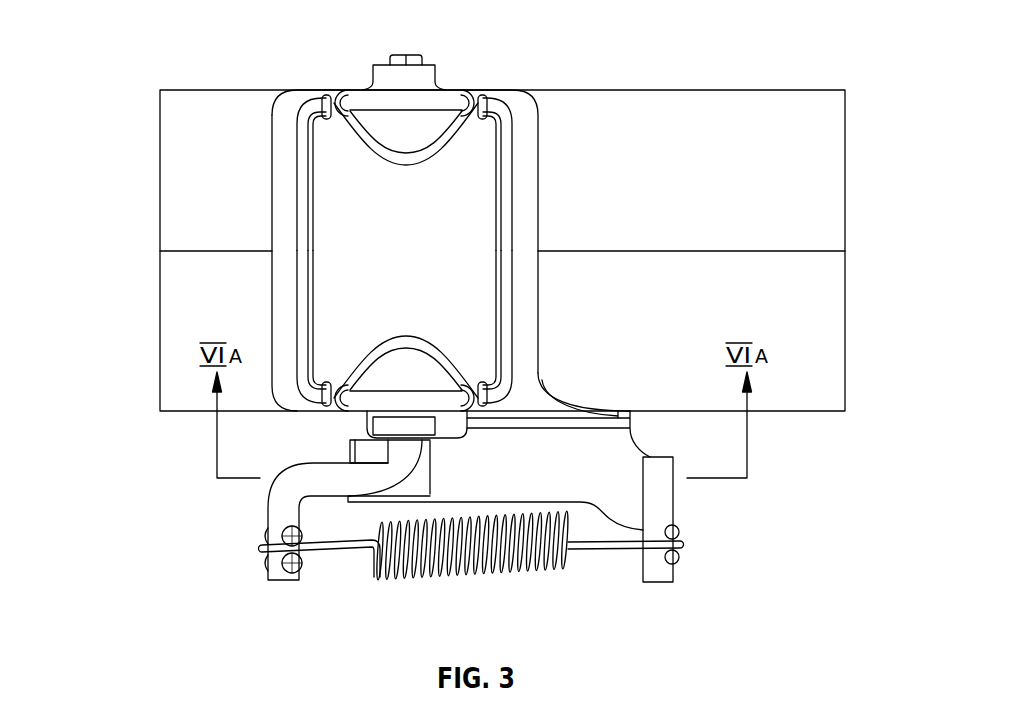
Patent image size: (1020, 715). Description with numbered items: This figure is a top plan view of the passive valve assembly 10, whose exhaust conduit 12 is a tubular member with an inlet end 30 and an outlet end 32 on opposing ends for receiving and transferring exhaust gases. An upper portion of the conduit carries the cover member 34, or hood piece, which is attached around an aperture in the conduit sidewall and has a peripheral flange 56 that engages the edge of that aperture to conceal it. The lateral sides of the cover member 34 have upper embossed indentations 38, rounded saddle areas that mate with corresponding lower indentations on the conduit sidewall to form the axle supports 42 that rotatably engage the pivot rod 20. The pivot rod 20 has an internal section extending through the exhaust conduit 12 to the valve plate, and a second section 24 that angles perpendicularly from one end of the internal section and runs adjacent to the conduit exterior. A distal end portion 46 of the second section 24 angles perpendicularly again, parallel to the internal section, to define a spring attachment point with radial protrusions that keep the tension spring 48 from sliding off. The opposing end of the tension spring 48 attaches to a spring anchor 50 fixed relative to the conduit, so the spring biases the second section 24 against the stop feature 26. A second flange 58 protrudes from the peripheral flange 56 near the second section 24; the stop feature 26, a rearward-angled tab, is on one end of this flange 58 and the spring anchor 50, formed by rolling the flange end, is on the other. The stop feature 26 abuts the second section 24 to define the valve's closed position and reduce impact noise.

The passive valve assembly 10 is at (140, 63).
The exhaust conduit 12 is at (695, 120).
The pivot rod 20 is at (280, 503).
The second section 24 is at (317, 456).
The stop feature 26 is at (382, 503).
The inlet end 30 is at (855, 122).
The outlet end 32 is at (138, 380).
The cover member 34 is at (412, 262).
The upper embossed indentations 38 is at (430, 100).
The axle supports 42 is at (363, 78).
The distal end portion 46 is at (250, 565).
The tension spring 48 is at (520, 572).
The spring anchor 50 is at (655, 508).
The peripheral flange 56 is at (527, 227).
The second flange 58 is at (542, 475).